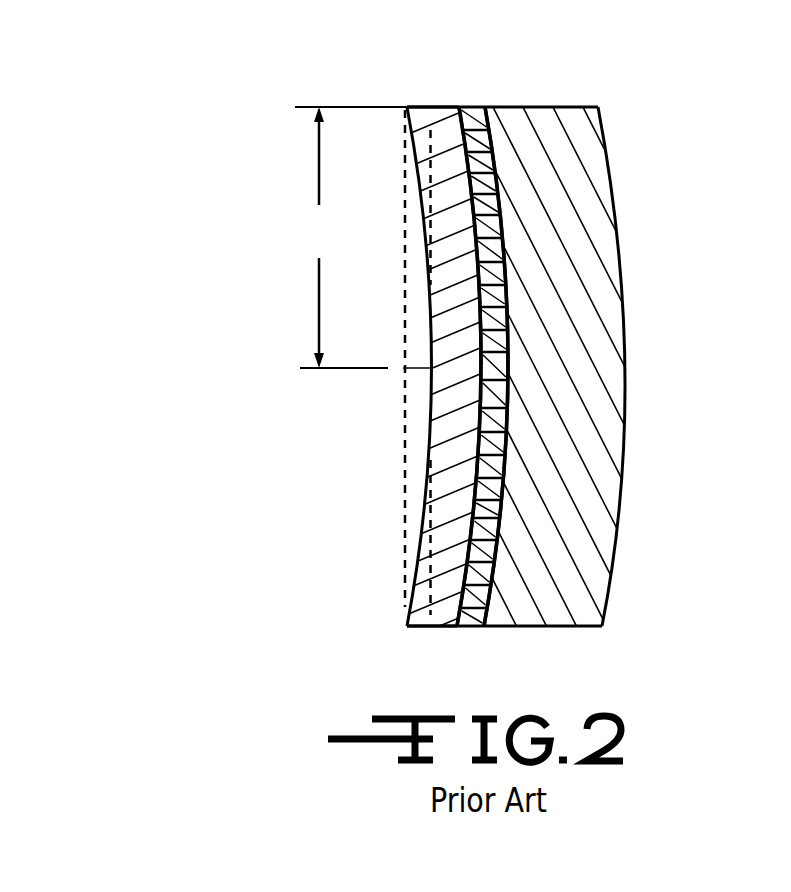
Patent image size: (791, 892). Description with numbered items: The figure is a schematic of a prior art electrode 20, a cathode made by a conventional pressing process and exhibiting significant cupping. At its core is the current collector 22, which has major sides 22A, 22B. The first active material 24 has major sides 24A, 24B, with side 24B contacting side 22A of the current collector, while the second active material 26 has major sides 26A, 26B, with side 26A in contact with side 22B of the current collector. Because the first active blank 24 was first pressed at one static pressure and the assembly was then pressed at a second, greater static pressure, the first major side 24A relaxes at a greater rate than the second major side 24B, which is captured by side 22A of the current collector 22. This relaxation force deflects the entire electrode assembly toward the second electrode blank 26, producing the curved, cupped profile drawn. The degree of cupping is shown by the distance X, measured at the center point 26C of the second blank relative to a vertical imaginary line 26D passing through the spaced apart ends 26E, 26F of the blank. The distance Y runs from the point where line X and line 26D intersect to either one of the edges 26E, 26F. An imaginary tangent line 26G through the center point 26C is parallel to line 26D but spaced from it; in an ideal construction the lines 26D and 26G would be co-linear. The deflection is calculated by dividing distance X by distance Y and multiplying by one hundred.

The electrode 20 is at (642, 168).
The current collector 22 is at (474, 321).
The first side of current collector 22A is at (488, 153).
The second side of current collector 22B is at (468, 154).
The first active material 24 is at (475, 367).
The first major side of first active material 24A is at (626, 372).
The second major side of first active material 24B is at (510, 433).
The second active material 26 is at (345, 357).
The first major side of second active material 26A is at (472, 500).
The second major side of second active material 26B is at (422, 553).
The center point 26C is at (433, 370).
The vertical imaginary line 26D is at (405, 287).
The first end of blank 26E is at (404, 110).
The second end of blank 26F is at (408, 625).
The imaginary tangent line 26G is at (442, 627).
The distance x X is at (428, 368).
The distance y Y is at (351, 237).